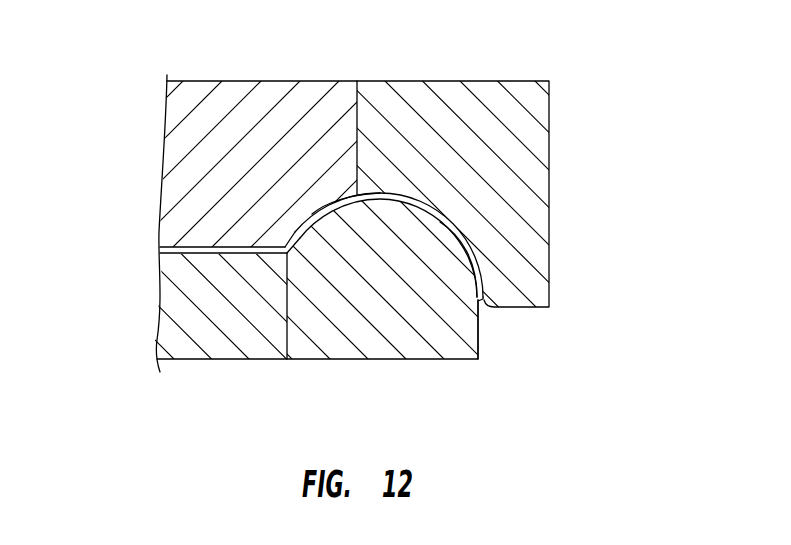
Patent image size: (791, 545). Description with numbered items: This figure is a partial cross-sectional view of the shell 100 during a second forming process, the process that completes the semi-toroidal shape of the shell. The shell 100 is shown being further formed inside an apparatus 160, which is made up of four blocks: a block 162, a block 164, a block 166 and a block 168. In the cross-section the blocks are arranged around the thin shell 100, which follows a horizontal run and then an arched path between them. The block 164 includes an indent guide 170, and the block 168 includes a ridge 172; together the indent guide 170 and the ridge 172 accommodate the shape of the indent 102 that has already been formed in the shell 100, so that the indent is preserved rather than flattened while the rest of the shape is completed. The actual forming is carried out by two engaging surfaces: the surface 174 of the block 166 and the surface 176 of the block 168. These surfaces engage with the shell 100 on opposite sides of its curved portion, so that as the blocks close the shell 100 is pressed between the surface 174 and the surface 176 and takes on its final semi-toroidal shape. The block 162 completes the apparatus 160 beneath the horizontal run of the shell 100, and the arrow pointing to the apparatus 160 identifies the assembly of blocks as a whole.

The shell 100 is at (491, 323).
The indent 102 is at (321, 205).
The apparatus 160 is at (130, 268).
The block 162 is at (188, 352).
The block 164 is at (218, 105).
The block 166 is at (480, 82).
The block 168 is at (358, 337).
The indent guide 170 is at (293, 226).
The ridge 172 is at (325, 215).
The surface 174 is at (460, 220).
The surface 176 is at (470, 228).